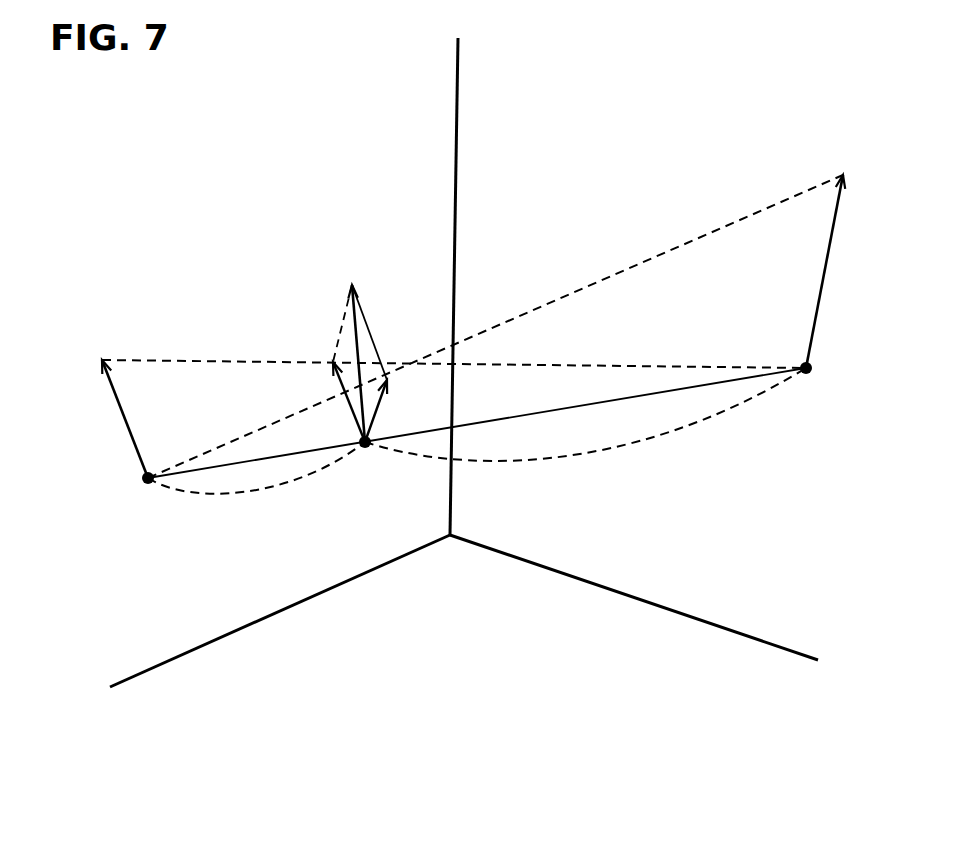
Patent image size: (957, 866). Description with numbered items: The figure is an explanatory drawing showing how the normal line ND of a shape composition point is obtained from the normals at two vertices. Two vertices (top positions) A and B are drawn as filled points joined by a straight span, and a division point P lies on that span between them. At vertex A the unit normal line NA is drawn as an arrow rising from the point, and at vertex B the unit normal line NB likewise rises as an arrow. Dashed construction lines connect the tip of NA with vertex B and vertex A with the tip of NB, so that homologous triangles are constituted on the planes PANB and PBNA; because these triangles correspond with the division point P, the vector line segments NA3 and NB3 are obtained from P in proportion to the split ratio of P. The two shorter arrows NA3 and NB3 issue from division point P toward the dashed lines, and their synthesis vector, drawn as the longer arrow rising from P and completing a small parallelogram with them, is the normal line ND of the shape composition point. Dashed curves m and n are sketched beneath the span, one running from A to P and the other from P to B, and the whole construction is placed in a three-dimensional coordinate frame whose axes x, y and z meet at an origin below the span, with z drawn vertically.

The normal line of vertex A NA is at (128, 438).
The normal line of vertex B NB is at (823, 297).
The normal line of shape composition point D ND is at (356, 348).
The normal line NA3 is at (302, 402).
The normal line NB3 is at (409, 411).
The vertex A is at (145, 495).
The vertex B is at (808, 385).
The division point P is at (363, 459).
The curve m between A and P m is at (256, 487).
The curve n between P and B n is at (585, 434).
The x axis x is at (263, 644).
The y axis y is at (656, 616).
The z axis z is at (455, 271).